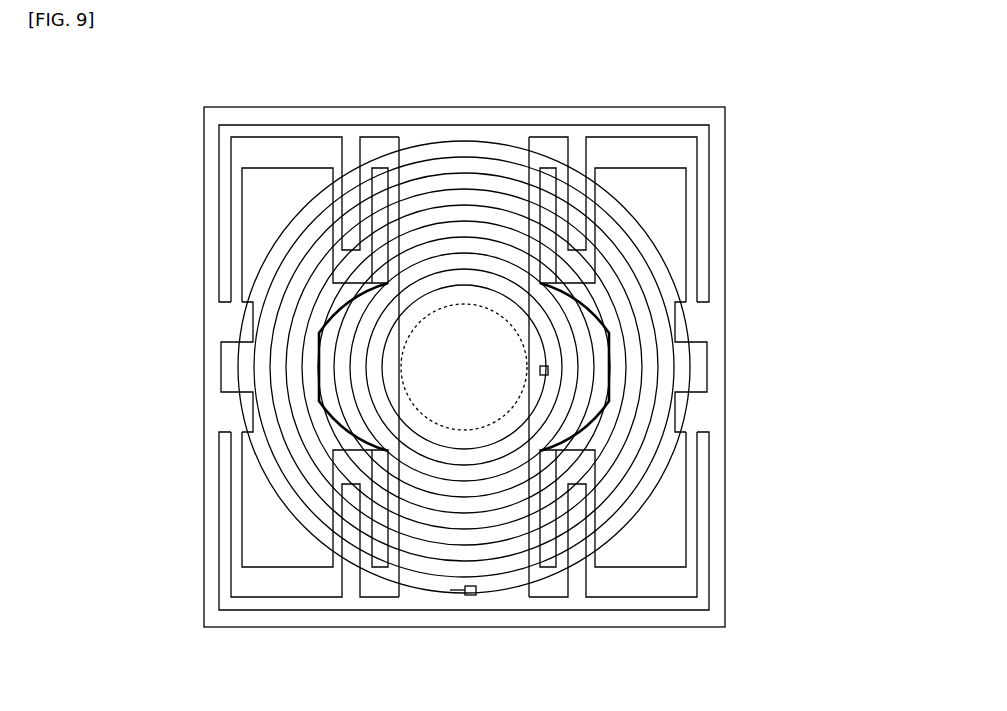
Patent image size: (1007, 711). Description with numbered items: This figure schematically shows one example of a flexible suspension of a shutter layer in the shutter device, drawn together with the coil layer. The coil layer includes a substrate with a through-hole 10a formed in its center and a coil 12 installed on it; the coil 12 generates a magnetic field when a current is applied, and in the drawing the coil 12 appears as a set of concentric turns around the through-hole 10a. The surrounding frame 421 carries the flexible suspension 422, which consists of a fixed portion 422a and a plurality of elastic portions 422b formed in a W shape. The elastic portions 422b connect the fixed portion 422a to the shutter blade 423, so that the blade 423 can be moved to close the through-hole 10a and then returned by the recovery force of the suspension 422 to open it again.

The through-hole 10a is at (480, 305).
The coil 12 is at (637, 502).
The substrate 421 is at (470, 630).
The electrode pattern 422 is at (99, 185).
The connection portion 422a is at (236, 326).
The elastic portions 422b is at (236, 200).
The terminal portion 423 is at (328, 373).